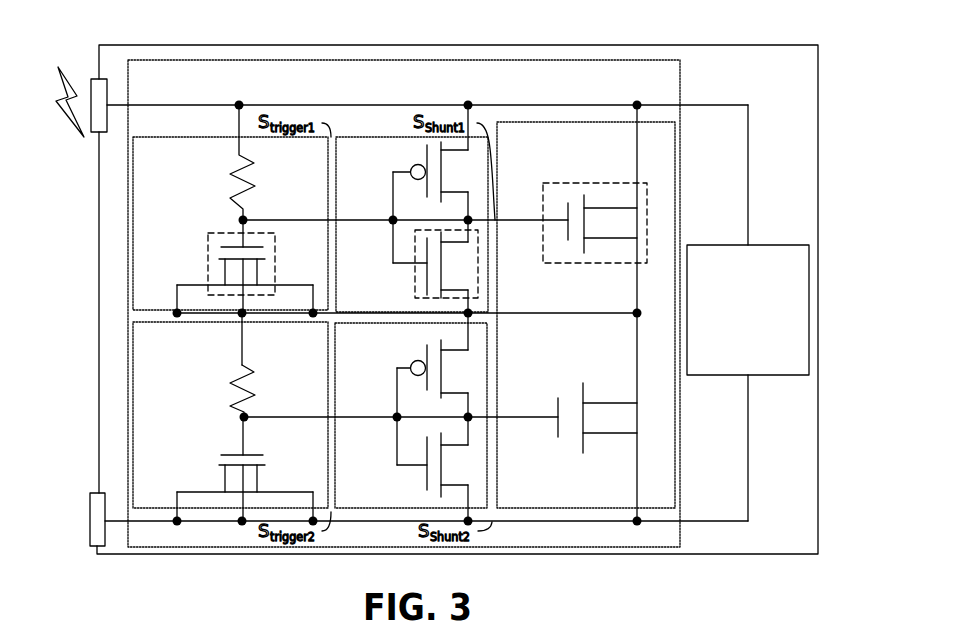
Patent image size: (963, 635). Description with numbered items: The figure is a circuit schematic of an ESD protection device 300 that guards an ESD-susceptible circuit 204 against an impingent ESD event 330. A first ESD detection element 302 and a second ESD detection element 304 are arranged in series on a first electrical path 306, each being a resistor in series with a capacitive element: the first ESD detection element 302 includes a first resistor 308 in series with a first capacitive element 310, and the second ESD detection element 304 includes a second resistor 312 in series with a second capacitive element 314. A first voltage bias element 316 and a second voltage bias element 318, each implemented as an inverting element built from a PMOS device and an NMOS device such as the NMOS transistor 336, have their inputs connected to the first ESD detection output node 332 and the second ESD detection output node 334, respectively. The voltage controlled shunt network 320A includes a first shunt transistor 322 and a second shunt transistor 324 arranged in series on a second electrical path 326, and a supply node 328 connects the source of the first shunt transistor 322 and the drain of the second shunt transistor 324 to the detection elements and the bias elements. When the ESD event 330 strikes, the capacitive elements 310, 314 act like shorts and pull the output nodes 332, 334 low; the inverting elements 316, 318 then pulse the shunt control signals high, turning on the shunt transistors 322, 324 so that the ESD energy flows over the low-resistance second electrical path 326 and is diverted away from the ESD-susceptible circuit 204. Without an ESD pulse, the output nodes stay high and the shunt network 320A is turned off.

The ESD-susceptible circuit 204 is at (765, 358).
The ESD protection device 300 is at (525, 90).
The first ESD detection element 302 is at (177, 173).
The second ESD detection element 304 is at (177, 323).
The first electrical path 306 is at (247, 342).
The first resistor 308 is at (262, 160).
The first capacitive element 310 is at (277, 249).
The second resistor 312 is at (262, 366).
The second capacitive element 314 is at (258, 448).
The first voltage bias element 316 is at (384, 178).
The second voltage bias element 318 is at (384, 367).
The voltage controlled shunt network 320A is at (648, 176).
The first shunt transistor 322 is at (646, 224).
The second shunt transistor 324 is at (646, 417).
The second electrical path 326 is at (628, 285).
The supply node 328 is at (530, 314).
The ESD event 330 is at (69, 63).
The first ESD detection output node 332 is at (265, 218).
The second ESD detection output node 334 is at (265, 415).
The NMOS transistor 336 is at (478, 262).